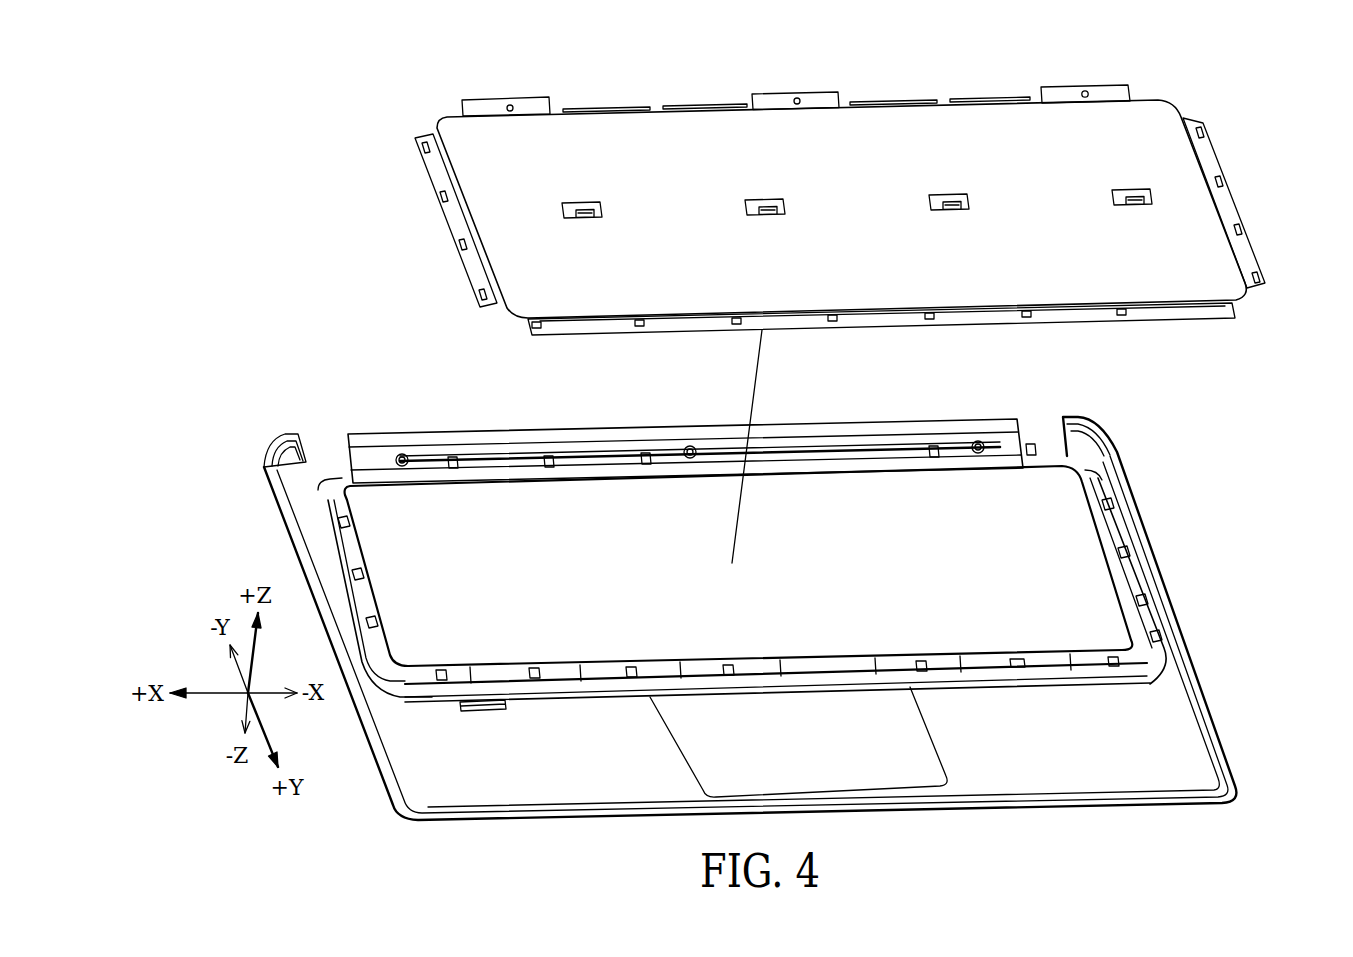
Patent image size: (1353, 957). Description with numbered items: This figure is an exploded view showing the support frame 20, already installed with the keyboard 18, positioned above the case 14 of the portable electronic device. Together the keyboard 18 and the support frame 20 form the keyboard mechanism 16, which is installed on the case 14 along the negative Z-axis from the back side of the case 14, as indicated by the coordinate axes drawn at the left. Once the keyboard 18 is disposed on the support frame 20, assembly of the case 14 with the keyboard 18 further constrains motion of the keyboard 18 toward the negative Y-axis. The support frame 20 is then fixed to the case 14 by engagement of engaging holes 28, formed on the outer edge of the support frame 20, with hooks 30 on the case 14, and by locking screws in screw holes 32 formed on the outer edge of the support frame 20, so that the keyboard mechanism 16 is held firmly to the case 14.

The case 14 is at (757, 618).
The keyboard mechanism 16 is at (870, 293).
The keyboard 18 is at (1136, 182).
The support frame 20 is at (844, 215).
The engaging hole 28 is at (1127, 318).
The hook 30 is at (1023, 657).
The screw hole 32 is at (1086, 91).